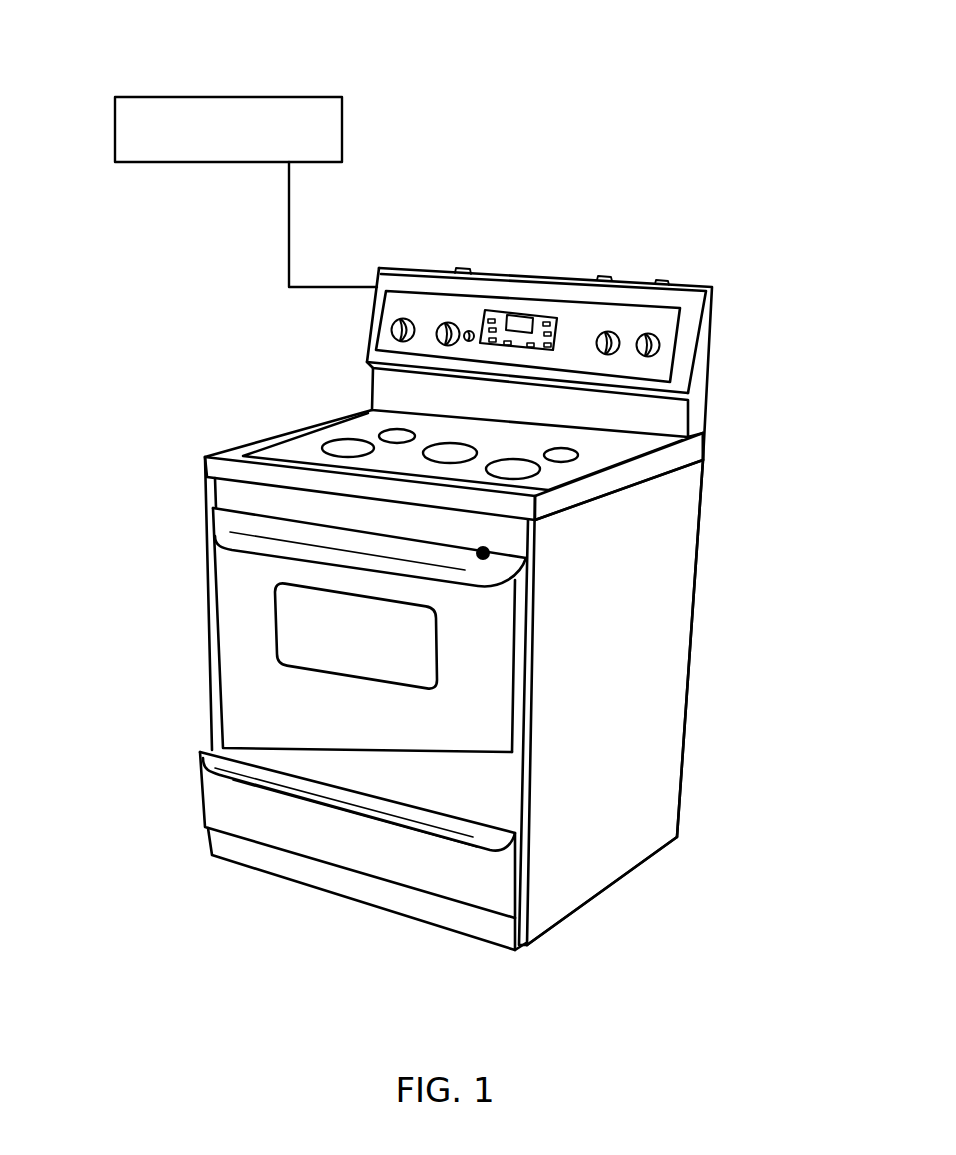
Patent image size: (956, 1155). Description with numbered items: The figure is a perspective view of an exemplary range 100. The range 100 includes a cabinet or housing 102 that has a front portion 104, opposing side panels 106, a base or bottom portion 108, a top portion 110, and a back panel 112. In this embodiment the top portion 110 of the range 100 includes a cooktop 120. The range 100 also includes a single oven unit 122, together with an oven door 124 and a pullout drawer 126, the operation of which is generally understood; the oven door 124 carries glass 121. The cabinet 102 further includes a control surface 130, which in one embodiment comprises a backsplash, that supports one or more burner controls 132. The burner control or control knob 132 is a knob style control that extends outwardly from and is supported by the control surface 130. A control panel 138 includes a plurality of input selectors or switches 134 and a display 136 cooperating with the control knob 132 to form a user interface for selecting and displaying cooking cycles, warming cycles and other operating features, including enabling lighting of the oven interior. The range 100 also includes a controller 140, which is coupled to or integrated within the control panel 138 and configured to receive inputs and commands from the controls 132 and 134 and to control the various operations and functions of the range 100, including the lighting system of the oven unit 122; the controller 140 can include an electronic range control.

The range 100 is at (158, 247).
The cabinet or housing 102 is at (304, 410).
The front portion 104 is at (503, 648).
The side panels 106 is at (668, 700).
The base or bottom portion 108 is at (557, 927).
The top portion 110 is at (704, 433).
The back panel 112 is at (698, 573).
The cooktop 120 is at (275, 446).
The glass 121 is at (427, 673).
The oven unit 122 is at (228, 602).
The oven door 124 is at (232, 690).
The pullout drawer 126 is at (205, 800).
The control surface 130 is at (687, 323).
The burner control or control knob 132 is at (405, 316).
The input selectors or switches 134 is at (552, 323).
The display 136 is at (518, 316).
The control panel 138 is at (540, 317).
The controller 140 is at (232, 97).